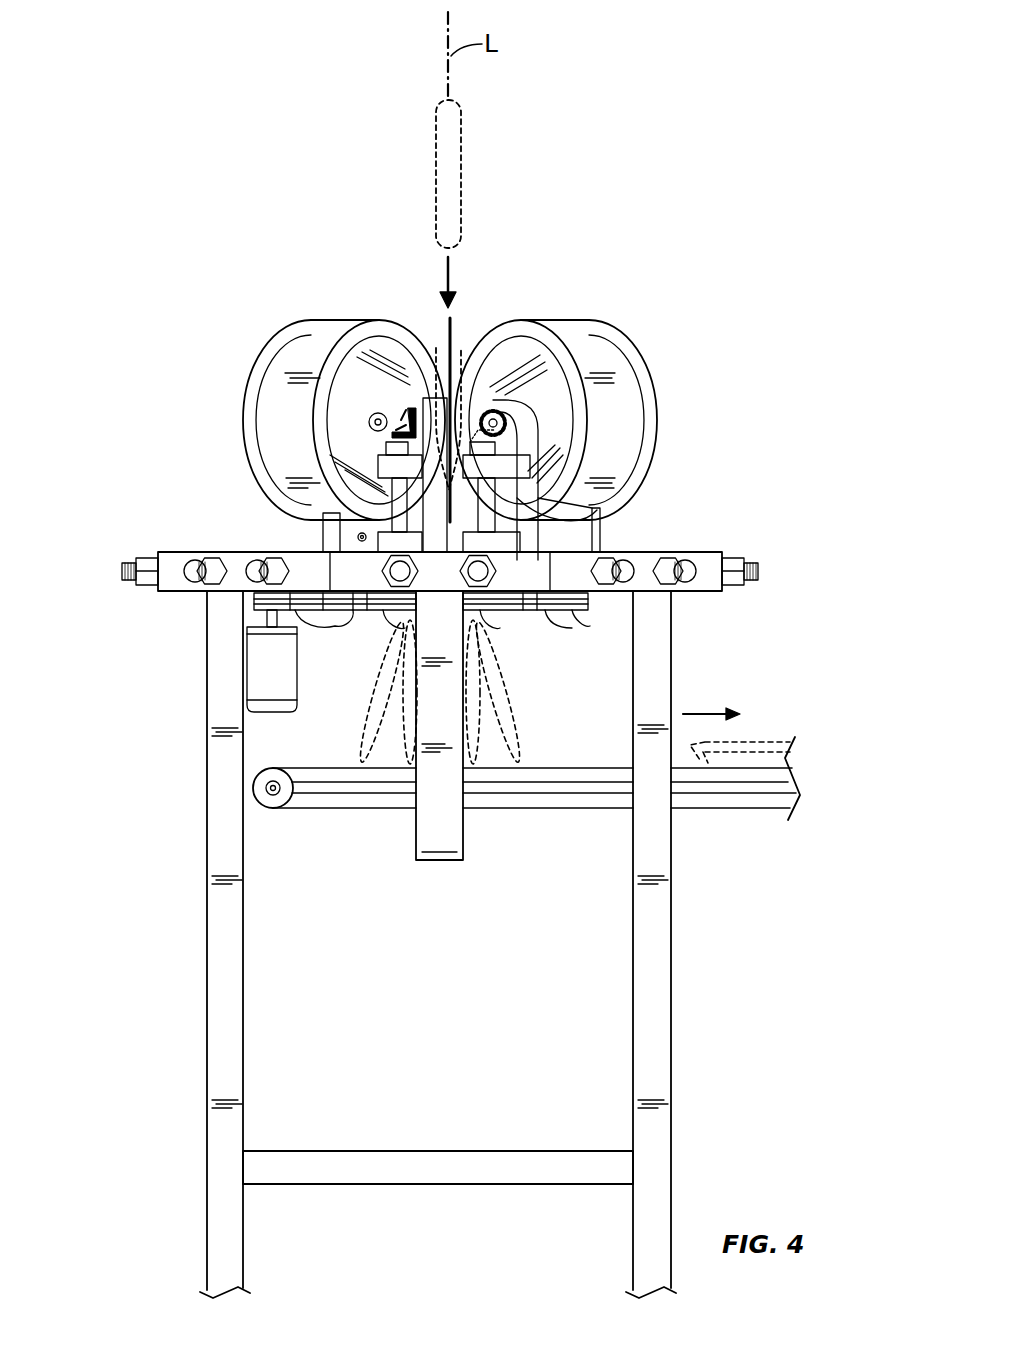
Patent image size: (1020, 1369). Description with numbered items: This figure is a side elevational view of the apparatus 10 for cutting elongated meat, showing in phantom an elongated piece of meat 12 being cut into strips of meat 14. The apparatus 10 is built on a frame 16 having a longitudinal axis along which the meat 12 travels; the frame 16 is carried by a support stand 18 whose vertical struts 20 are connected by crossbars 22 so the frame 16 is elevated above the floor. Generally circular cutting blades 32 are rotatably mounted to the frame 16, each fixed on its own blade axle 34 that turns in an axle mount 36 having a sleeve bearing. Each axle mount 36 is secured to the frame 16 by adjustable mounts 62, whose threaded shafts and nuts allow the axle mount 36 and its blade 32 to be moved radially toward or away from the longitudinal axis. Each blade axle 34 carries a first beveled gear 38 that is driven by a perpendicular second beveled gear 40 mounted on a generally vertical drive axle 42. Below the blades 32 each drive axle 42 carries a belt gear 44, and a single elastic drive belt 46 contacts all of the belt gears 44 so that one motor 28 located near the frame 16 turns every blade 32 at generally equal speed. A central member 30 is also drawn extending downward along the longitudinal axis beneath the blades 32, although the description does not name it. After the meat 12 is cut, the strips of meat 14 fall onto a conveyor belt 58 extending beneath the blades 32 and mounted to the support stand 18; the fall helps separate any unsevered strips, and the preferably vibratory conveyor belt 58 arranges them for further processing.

The apparatus 10 is at (590, 242).
The elongated piece of meat 12 is at (464, 172).
The strips of meat 14 is at (520, 713).
The frame 16 is at (705, 552).
The support stand 18 is at (205, 1022).
The vertical struts 20 is at (205, 1062).
The crossbars 22 is at (440, 1150).
The motor 28 is at (260, 674).
The central column 30 is at (447, 828).
The cutting blades 32 is at (603, 294).
The blade axle 34 is at (372, 422).
The axle mount 36 is at (528, 442).
The first beveled gear 38 is at (405, 415).
The second beveled gear 40 is at (563, 457).
The drive axle 42 is at (490, 503).
The belt gear 44 is at (300, 613).
The drive belt 46 is at (365, 605).
The conveyor belt 58 is at (555, 767).
The adjustable mounts 62 is at (200, 556).